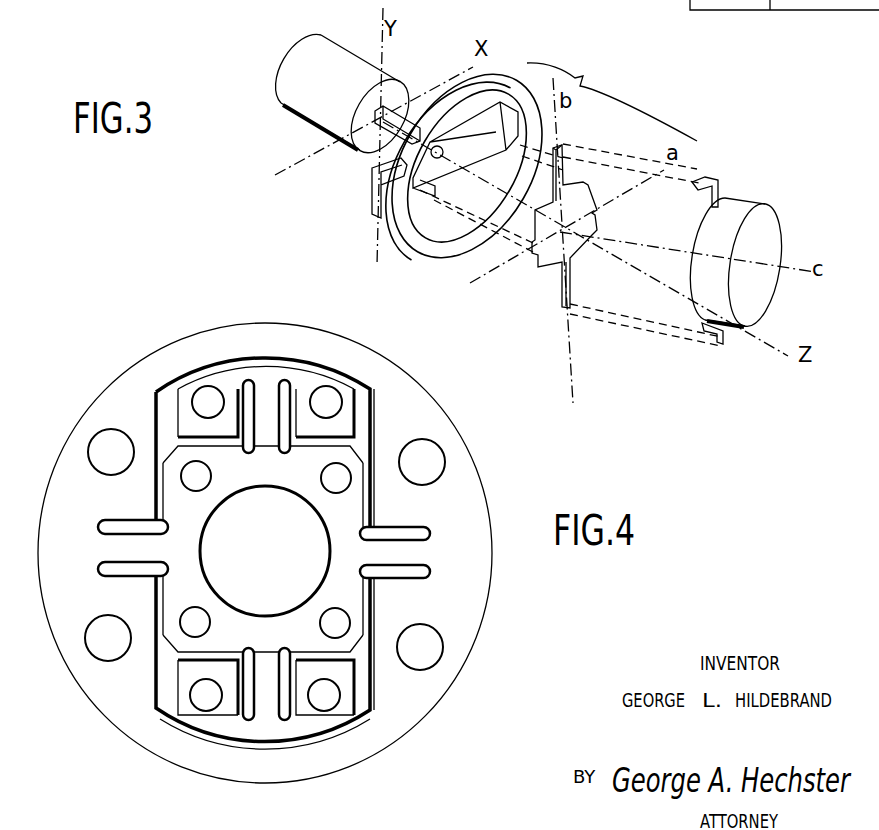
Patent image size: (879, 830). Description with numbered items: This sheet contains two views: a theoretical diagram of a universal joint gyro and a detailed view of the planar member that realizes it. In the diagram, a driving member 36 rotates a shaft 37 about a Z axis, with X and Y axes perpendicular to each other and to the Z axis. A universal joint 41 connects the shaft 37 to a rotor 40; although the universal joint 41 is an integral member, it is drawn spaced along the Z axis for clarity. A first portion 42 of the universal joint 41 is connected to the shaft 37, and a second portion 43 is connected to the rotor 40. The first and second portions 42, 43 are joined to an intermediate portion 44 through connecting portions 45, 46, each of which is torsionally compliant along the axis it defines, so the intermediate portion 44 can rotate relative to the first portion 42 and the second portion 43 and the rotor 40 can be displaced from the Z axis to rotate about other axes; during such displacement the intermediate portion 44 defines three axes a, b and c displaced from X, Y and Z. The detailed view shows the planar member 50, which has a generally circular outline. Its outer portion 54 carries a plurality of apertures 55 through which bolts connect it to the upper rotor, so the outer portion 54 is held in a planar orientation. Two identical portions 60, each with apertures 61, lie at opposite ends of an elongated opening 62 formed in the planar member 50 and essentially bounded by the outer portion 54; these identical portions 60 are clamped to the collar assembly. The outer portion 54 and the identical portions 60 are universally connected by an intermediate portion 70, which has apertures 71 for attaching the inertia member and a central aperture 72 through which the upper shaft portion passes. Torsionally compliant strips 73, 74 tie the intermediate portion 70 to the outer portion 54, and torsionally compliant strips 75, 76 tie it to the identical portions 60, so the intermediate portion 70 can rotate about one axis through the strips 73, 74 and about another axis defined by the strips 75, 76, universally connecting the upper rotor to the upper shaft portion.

In FIG. 3, the driving member 36 is at (300, 97).
In FIG. 3, the shaft 37 is at (413, 124).
In FIG. 3, the rotor 40 is at (762, 233).
In FIG. 3, the universal joint 41 is at (612, 95).
In FIG. 3, the first portion 42 is at (397, 170).
In FIG. 3, the second portion 43 is at (718, 188).
In FIG. 3, the intermediate portion 44 is at (552, 270).
In FIG. 3, the connecting portion 45 is at (515, 144).
In FIG. 3, the connecting portion 46 is at (566, 165).
In FIG. 4, the planar member 50 is at (62, 505).
In FIG. 4, the outer portion 54 is at (75, 589).
In FIG. 4, the apertures 55 is at (97, 455).
In FIG. 4, the identical portions 60 is at (183, 410).
In FIG. 4, the apertures 61 is at (212, 392).
In FIG. 4, the elongated opening 62 is at (270, 356).
In FIG. 4, the intermediate portion 70 is at (170, 604).
In FIG. 4, the apertures 71 is at (211, 478).
In FIG. 4, the central aperture 72 is at (320, 516).
In FIG. 4, the torsionally compliant strip 73 is at (137, 548).
In FIG. 4, the torsionally compliant strip 74 is at (397, 553).
In FIG. 4, the torsionally compliant strip 75 is at (278, 414).
In FIG. 4, the torsionally compliant strip 76 is at (278, 696).